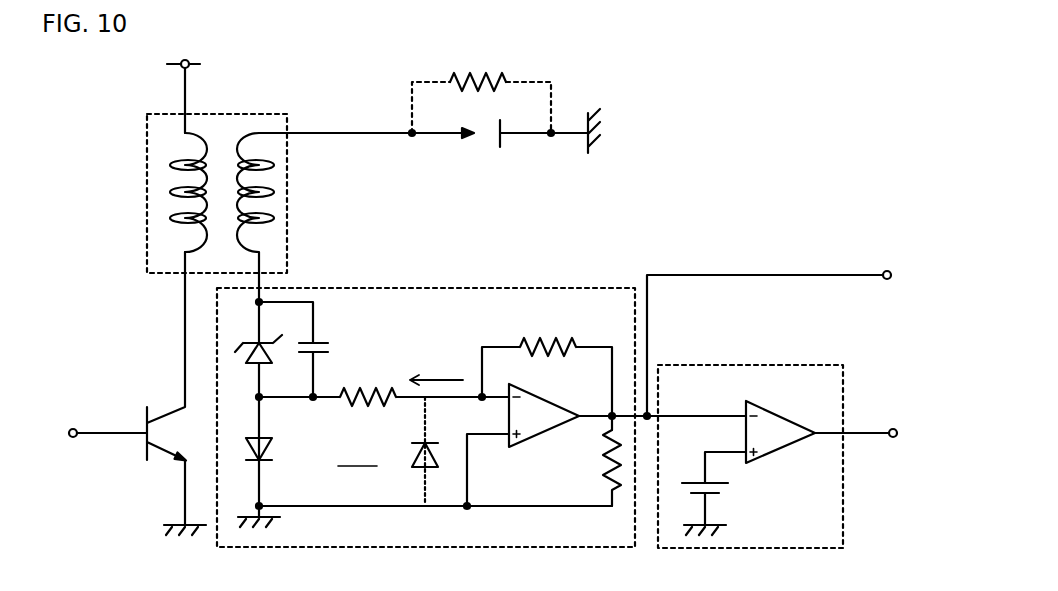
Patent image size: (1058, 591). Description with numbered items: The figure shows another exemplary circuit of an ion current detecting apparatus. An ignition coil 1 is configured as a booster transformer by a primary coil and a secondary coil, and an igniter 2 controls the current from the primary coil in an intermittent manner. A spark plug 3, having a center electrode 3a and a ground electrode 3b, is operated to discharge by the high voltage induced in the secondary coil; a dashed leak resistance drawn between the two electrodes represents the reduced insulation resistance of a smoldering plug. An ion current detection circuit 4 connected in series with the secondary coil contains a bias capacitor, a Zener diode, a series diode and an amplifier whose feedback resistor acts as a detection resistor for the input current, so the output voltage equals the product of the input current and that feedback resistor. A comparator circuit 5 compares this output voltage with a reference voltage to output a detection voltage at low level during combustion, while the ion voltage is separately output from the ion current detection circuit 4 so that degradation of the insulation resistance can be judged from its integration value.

The ignition coil 1 is at (258, 113).
The igniter 2 is at (125, 489).
The spark plug 3 is at (490, 179).
The center electrode 3a is at (474, 129).
The ground electrode 3b is at (500, 127).
The ion current detection circuit 4 is at (437, 287).
The comparator circuit 5 is at (768, 364).